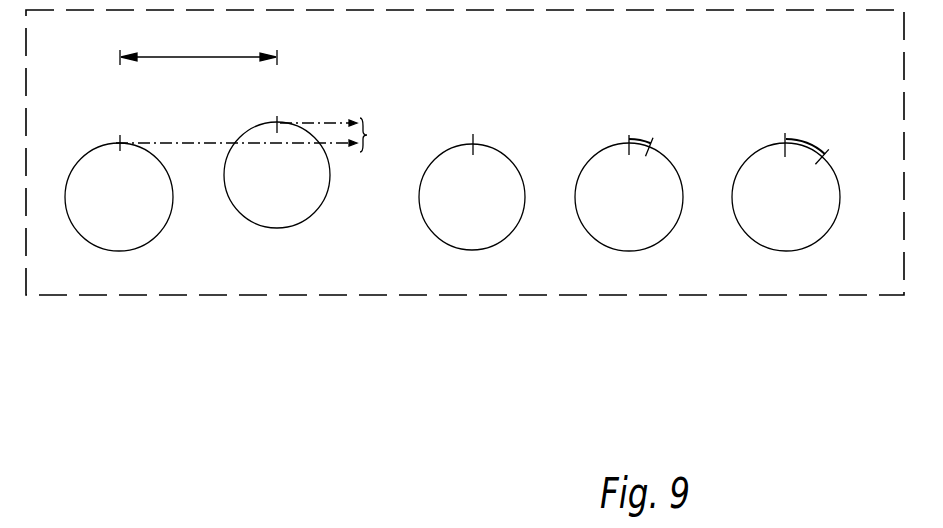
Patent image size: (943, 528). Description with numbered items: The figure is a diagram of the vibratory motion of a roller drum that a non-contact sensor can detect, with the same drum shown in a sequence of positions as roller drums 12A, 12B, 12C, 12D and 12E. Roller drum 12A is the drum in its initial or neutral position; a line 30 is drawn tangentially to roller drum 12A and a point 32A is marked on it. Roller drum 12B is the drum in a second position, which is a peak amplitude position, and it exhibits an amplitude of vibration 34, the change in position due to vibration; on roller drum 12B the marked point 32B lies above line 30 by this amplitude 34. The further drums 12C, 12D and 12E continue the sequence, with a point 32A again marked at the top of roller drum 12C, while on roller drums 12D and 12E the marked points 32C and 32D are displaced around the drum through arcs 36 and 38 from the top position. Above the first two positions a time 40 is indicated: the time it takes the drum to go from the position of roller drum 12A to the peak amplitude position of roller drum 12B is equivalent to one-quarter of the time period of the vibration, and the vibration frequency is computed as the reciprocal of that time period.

The roller drum in initial position 12A is at (130, 252).
The roller drum in second position 12B is at (287, 227).
The roller drum in third position 12C is at (478, 250).
The roller drum in fourth position 12D is at (637, 250).
The roller drum in fifth position 12E is at (793, 250).
The line 30 is at (203, 143).
The point 32A is at (121, 140).
The marked point on roller drum in second position 32B is at (278, 118).
The marked point on roller drum in fourth position 32C is at (652, 141).
The marked point on roller drum in fifth position 32D is at (826, 157).
The amplitude of vibration 34 is at (368, 135).
The angular displacement of marked point 36 is at (642, 139).
The larger angular displacement of marked point 38 is at (810, 142).
The time 40 is at (238, 57).